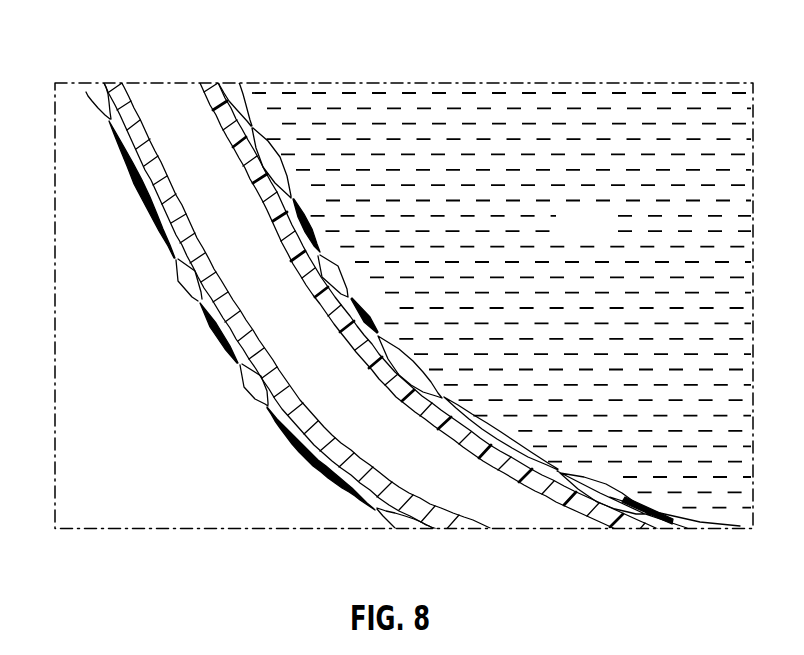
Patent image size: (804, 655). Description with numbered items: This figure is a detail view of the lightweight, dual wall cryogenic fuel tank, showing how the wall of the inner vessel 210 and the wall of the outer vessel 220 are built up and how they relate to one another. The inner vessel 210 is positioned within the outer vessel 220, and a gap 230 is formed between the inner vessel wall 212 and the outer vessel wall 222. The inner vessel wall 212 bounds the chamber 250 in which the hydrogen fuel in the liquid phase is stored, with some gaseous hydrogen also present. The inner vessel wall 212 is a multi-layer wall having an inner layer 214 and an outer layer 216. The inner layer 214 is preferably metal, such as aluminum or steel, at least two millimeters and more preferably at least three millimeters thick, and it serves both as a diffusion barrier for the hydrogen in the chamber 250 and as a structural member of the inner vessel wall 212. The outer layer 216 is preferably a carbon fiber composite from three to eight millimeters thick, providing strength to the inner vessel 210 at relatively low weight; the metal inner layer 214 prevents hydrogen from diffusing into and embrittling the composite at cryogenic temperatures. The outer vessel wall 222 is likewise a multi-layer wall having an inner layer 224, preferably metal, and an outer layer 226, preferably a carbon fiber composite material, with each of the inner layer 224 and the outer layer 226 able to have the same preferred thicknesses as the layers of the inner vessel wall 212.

The inner vessel 210 is at (678, 527).
The inner vessel wall 212 is at (460, 282).
The inner layer 214 is at (250, 93).
The outer layer 216 is at (220, 88).
The outer vessel 220 is at (412, 526).
The outer vessel wall 222 is at (257, 282).
The inner layer 224 is at (131, 93).
The outer layer 226 is at (85, 93).
The gap 230 is at (542, 517).
The chamber 250 is at (609, 232).